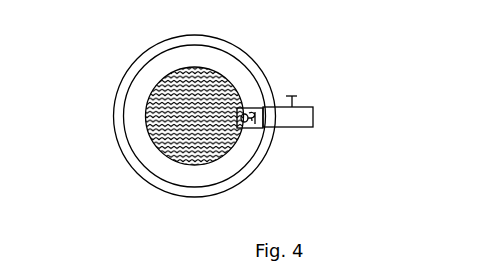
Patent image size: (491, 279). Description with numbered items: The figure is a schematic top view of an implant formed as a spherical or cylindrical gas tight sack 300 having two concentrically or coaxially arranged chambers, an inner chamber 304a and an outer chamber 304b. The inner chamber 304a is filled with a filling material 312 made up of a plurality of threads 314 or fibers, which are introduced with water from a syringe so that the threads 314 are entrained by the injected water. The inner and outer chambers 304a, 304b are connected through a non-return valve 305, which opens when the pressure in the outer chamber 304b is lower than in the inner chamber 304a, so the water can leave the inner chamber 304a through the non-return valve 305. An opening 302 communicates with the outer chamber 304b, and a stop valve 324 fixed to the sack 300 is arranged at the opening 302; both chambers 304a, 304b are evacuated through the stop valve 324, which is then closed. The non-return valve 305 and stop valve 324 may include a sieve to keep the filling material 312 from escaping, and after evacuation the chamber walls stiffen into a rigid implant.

The gas tight sack 300 is at (365, 131).
The opening 302 is at (292, 127).
The inner chamber 304a is at (145, 118).
The outer chamber 304b is at (117, 98).
The non-return valve 305 is at (250, 108).
The filling material 312 is at (198, 140).
The threads 314 is at (197, 98).
The stop valve 324 is at (298, 118).